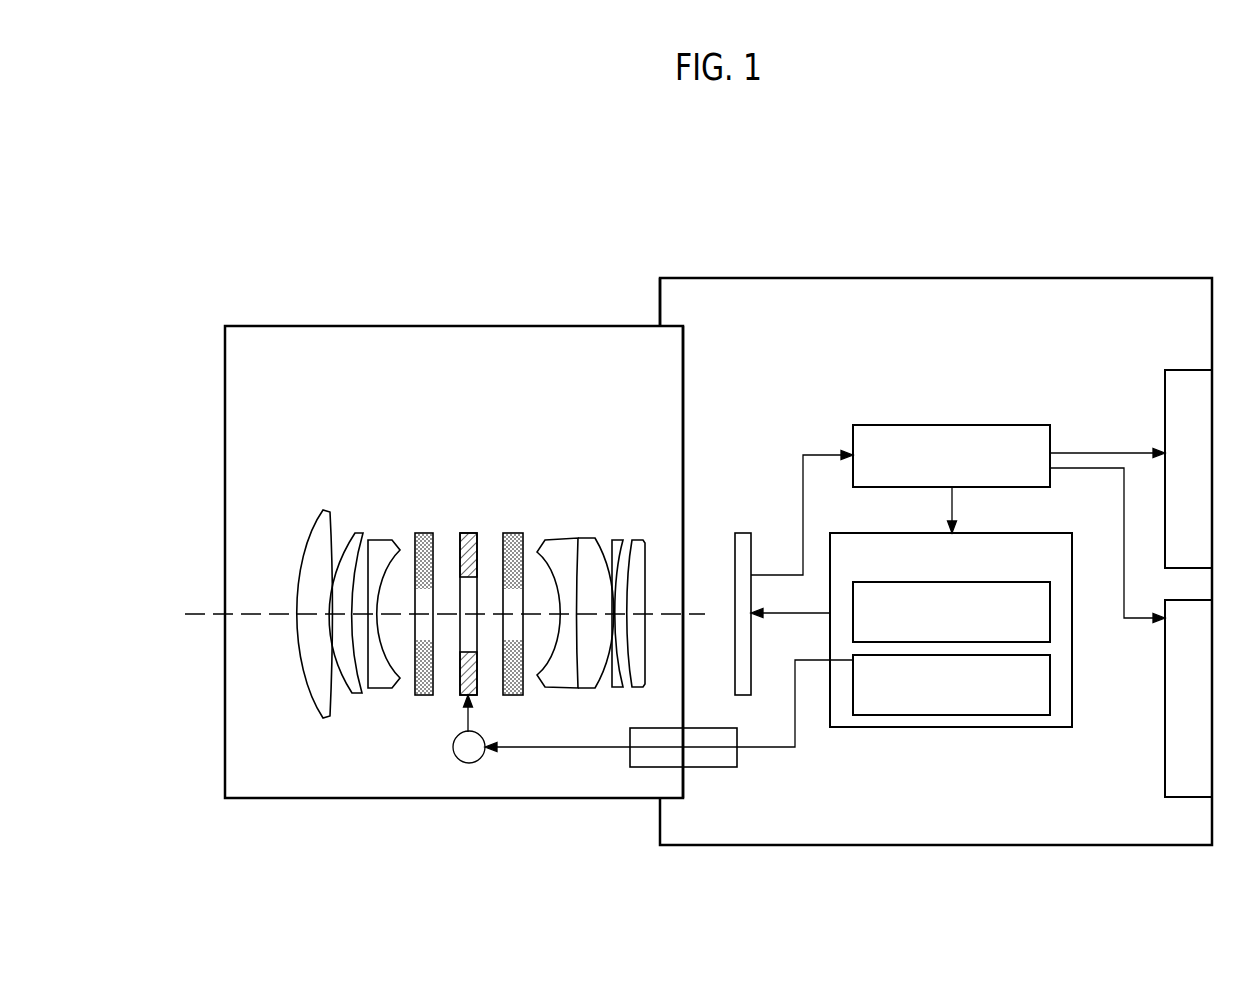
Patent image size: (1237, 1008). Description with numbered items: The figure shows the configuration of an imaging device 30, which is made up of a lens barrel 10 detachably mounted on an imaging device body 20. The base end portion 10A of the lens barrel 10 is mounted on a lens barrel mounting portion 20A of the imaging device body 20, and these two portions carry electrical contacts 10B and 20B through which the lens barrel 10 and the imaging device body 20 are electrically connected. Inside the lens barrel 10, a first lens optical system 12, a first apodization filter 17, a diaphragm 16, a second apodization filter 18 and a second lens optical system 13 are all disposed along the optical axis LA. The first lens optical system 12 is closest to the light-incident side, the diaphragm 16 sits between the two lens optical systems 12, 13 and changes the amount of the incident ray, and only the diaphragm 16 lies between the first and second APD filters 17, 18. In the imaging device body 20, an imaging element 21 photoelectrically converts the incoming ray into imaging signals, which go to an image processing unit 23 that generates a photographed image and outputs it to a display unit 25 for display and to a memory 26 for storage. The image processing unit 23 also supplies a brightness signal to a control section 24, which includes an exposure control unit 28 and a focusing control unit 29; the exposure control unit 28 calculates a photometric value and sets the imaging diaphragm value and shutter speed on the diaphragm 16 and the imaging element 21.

The imaging device 30 is at (374, 240).
The lens barrel 10 is at (470, 326).
The imaging device body 20 is at (880, 278).
The lens barrel mounting portion 20A is at (683, 364).
The electrical contact 20B is at (727, 767).
The base end portion 10A is at (684, 781).
The electrical contact 10B is at (641, 767).
The first lens optical system 12 is at (402, 514).
The second lens optical system 13 is at (655, 540).
The diaphragm 16 is at (468, 533).
The first apodization filter 17 is at (424, 533).
The second apodization filter 18 is at (513, 533).
The imaging element 21 is at (745, 533).
The image processing unit 23 is at (950, 425).
The control section 24 is at (1067, 533).
The display unit 25 is at (1165, 393).
The memory 26 is at (1165, 770).
The exposure control unit 28 is at (1050, 610).
The focusing control unit 29 is at (1050, 685).
The optical axis LA is at (195, 613).